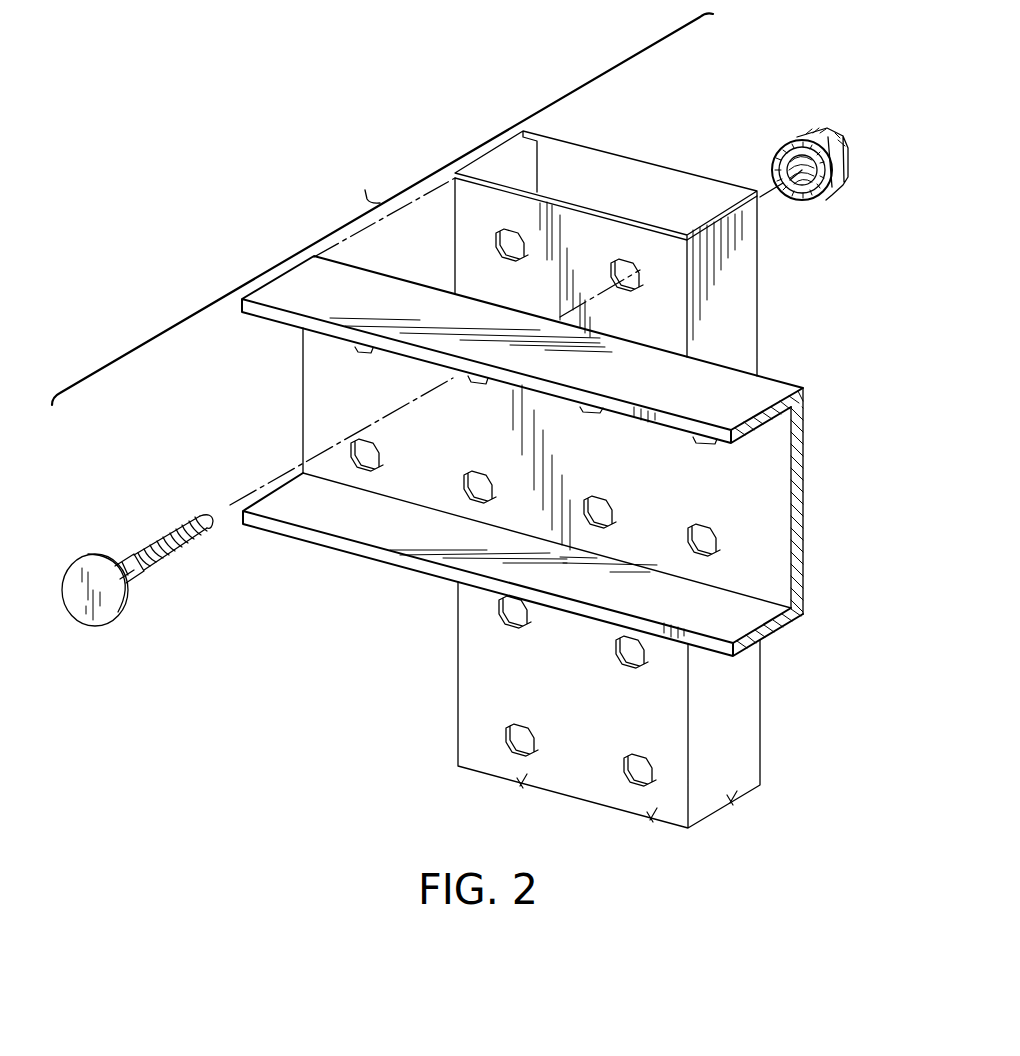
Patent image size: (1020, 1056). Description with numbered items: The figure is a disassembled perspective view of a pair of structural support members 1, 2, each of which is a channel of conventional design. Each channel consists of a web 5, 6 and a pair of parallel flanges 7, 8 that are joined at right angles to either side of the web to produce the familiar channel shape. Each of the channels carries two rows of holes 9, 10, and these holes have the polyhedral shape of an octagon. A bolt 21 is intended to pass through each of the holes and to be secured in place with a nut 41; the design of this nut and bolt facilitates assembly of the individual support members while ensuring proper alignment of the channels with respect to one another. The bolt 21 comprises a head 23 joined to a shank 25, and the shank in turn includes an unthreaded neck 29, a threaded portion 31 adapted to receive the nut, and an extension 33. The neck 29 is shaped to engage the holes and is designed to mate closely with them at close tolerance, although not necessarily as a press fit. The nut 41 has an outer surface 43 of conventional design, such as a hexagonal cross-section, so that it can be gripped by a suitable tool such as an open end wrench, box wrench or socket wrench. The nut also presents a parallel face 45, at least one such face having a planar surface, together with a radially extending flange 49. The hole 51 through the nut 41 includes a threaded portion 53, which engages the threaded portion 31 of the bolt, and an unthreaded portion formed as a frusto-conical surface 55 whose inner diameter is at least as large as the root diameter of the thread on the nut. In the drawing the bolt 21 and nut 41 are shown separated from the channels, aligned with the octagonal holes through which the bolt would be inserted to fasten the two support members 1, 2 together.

The support member 1 is at (263, 320).
The support member 2 is at (453, 746).
The web 5 is at (805, 530).
The web 6 is at (593, 207).
The flange 7 is at (767, 392).
The flange 8 is at (530, 142).
The holes 9 is at (707, 535).
The holes 10 is at (622, 262).
The bolt 21 is at (164, 556).
The head 23 is at (105, 593).
The shank 25 is at (194, 521).
The unthreaded neck 29 is at (137, 575).
The threaded portion 31 is at (173, 527).
The extension 33 is at (208, 513).
The nut 41 is at (781, 158).
The outer surface 43 is at (840, 180).
The face 45 is at (783, 157).
The radially extending flange 49 is at (810, 207).
The hole 51 is at (802, 185).
The threaded portion 53 is at (792, 143).
The frusto-conical surface 55 is at (778, 168).